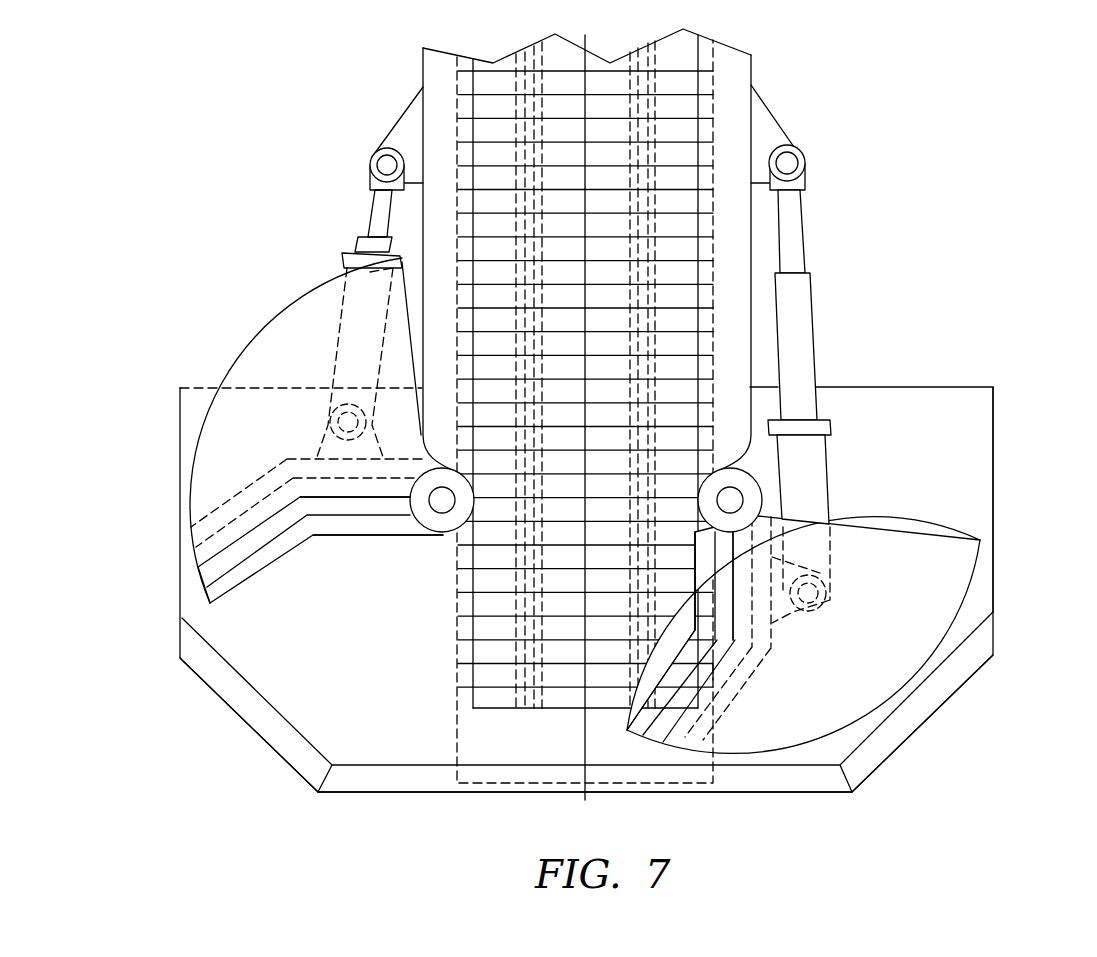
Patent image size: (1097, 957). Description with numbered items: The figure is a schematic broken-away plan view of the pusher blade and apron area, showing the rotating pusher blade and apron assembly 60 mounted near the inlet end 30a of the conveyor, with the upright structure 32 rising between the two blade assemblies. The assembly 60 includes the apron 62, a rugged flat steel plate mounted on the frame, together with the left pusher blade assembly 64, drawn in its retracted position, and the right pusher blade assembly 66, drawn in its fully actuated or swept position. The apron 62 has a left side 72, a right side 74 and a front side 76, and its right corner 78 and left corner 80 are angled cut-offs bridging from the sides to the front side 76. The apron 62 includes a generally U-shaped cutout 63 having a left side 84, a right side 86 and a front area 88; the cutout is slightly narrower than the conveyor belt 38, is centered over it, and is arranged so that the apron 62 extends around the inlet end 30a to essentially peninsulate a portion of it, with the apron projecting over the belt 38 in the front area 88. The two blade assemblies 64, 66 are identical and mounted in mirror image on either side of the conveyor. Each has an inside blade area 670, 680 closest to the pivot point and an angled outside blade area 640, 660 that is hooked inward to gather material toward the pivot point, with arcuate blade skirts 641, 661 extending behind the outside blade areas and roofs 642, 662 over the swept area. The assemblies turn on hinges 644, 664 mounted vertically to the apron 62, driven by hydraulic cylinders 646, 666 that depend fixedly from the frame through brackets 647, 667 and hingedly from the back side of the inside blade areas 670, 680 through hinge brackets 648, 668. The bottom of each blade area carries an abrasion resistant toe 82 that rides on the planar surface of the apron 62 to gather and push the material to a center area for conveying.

The inlet end 30a is at (543, 792).
The upright frame member 32 is at (423, 63).
The conveyor belt 38 is at (602, 394).
The rotating pusher blade and apron assembly 60 is at (290, 220).
The apron 62 is at (311, 689).
The U-shaped cutout 63 is at (470, 632).
The left pusher blade assembly 64 is at (304, 368).
The right pusher blade assembly 66 is at (813, 419).
The left side 72 is at (200, 602).
The right side 74 is at (967, 472).
The front side 76 is at (757, 778).
The right corner 78 is at (935, 693).
The left corner 80 is at (260, 715).
The toe 82 is at (264, 562).
The left side of cutout 84 is at (473, 677).
The right side of cutout 86 is at (713, 668).
The front area of cutout 88 is at (552, 710).
The angled outside blade area 640 is at (229, 582).
The arcuate blade skirt 641 is at (307, 293).
The roof 642 is at (278, 430).
The hinge 644 is at (442, 505).
The hydraulic cylinder 646 is at (342, 253).
The bracket 647 is at (397, 120).
The hinge bracket 648 is at (327, 445).
The angled outside blade area 660 is at (636, 712).
The arcuate blade skirt 661 is at (967, 600).
The roof 662 is at (813, 634).
The hinge 664 is at (733, 498).
The hydraulic cylinder 666 is at (802, 347).
The bracket 667 is at (778, 120).
The hinge bracket 668 is at (788, 620).
The inside blade area 670 is at (327, 517).
The inside blade area 680 is at (810, 597).